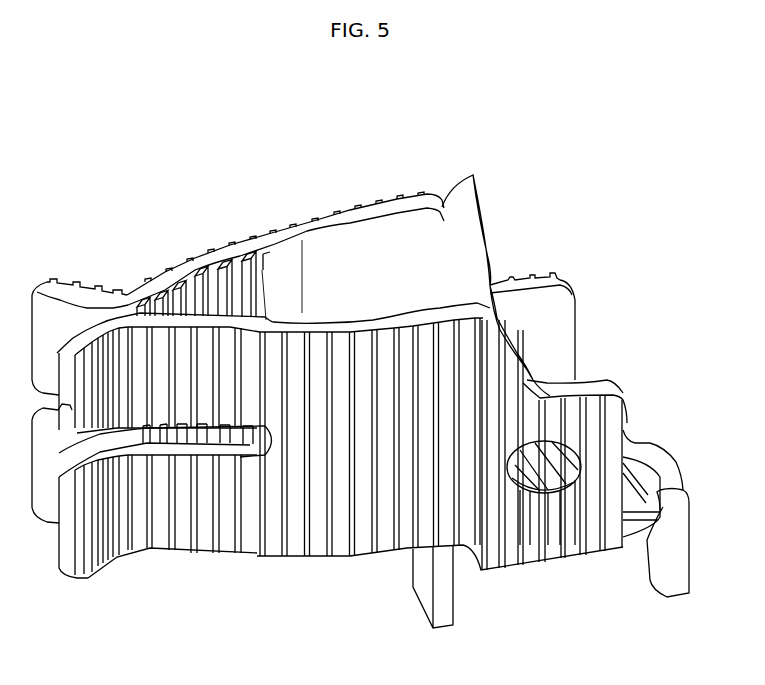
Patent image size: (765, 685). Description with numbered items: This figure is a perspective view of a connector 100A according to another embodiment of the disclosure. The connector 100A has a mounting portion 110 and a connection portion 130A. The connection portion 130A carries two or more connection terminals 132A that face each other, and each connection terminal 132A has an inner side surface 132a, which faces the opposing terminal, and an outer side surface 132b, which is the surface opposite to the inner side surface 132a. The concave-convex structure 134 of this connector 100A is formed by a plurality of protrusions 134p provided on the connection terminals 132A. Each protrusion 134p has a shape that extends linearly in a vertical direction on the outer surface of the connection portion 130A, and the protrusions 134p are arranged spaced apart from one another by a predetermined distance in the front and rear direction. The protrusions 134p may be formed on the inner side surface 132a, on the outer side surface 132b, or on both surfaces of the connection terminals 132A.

The connector 100A is at (132, 143).
The connection portion 130A is at (505, 138).
The connection terminals 132A is at (449, 225).
The inner side surface 132a is at (398, 225).
The outer side surface 132b is at (487, 338).
The concave-convex structure 134 is at (231, 561).
The protrusions 134p is at (143, 335).
The mounting portion 110 is at (645, 582).